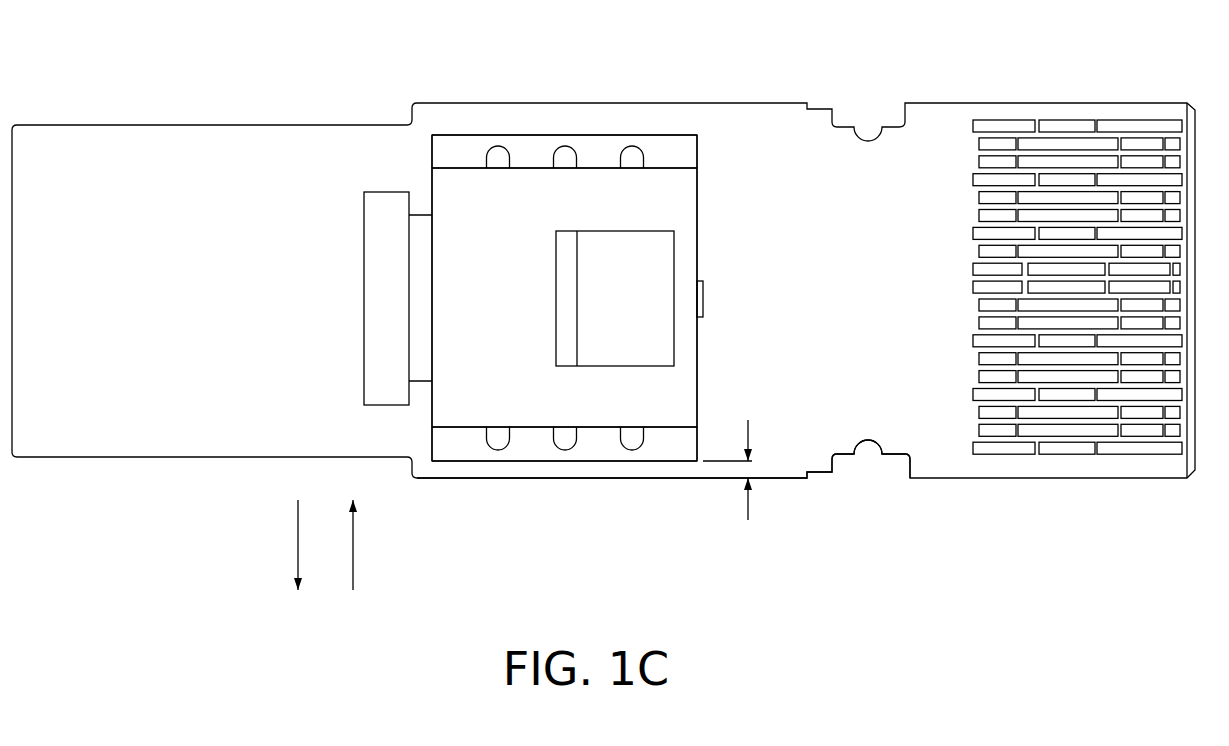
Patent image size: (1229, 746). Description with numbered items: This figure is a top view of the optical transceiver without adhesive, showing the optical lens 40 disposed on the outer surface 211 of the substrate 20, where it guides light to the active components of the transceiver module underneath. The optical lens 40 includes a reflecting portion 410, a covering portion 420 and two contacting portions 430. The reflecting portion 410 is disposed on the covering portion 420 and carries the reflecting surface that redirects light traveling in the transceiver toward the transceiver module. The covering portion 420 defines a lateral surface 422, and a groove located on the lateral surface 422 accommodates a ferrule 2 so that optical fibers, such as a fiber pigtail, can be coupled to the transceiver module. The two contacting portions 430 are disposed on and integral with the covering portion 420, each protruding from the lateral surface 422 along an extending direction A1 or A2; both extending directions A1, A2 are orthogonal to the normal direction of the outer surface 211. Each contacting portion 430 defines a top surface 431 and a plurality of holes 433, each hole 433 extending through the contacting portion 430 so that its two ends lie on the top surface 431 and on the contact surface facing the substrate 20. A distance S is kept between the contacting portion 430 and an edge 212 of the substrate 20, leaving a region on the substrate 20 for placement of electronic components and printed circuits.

The ferrule 2 is at (352, 222).
The substrate 20 is at (934, 105).
The outer surface 211 is at (938, 433).
The edge 212 is at (795, 480).
The optical lens 40 is at (705, 223).
The reflecting portion 410 is at (598, 255).
The covering portion 420 is at (498, 202).
The lateral surface 422 is at (430, 180).
The contacting portion 430 is at (683, 135).
The top surface 431 is at (650, 145).
The hole 433 is at (565, 150).
The distance S is at (739, 470).
The extending direction A1 is at (298, 560).
The extending direction A2 is at (353, 560).